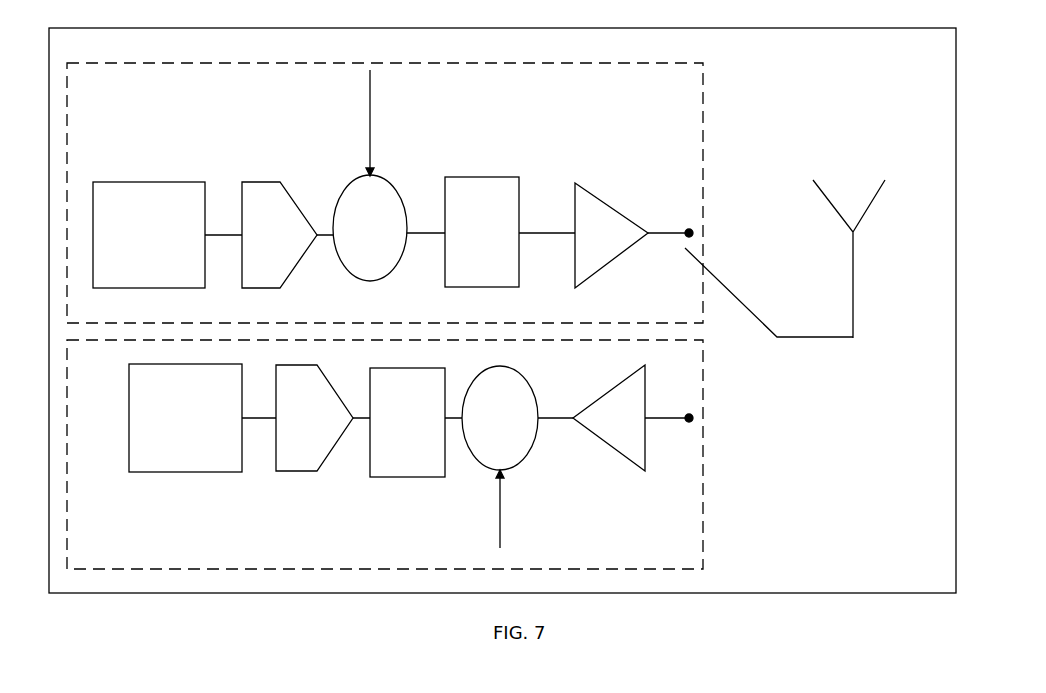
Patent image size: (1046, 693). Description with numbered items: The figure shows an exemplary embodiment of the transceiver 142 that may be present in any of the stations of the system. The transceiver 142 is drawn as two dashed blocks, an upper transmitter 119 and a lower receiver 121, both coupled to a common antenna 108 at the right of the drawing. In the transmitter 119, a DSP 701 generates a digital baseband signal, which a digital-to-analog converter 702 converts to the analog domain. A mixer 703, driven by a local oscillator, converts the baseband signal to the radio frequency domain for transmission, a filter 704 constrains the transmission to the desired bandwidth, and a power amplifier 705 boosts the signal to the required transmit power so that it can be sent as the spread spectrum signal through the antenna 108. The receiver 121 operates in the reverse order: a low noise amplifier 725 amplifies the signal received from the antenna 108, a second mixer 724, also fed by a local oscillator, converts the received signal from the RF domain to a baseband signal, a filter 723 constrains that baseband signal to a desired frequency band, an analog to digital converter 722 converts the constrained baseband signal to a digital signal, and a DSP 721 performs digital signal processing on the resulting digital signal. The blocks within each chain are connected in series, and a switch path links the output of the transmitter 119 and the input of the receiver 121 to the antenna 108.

The transceiver 142 is at (800, 28).
The transmitter 119 is at (614, 62).
The receiver 121 is at (703, 503).
The antenna 108 is at (876, 190).
The DSP 701 is at (96, 182).
The digital-to-analog converter 702 is at (252, 182).
The mixer 703 is at (348, 270).
The filter 704 is at (500, 177).
The power amplifier 705 is at (598, 192).
The DSP 721 is at (150, 472).
The analog to digital converter 722 is at (296, 471).
The filter 723 is at (415, 477).
The mixer 724 is at (534, 396).
The low noise amplifier 725 is at (628, 453).